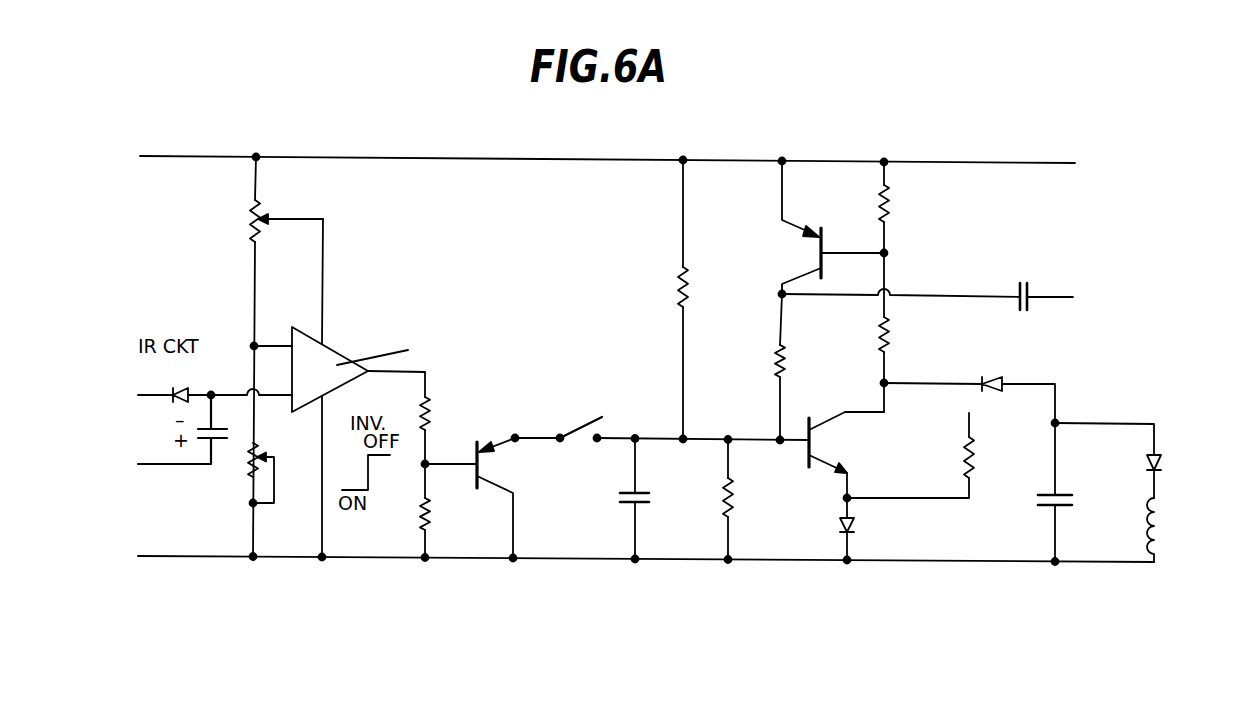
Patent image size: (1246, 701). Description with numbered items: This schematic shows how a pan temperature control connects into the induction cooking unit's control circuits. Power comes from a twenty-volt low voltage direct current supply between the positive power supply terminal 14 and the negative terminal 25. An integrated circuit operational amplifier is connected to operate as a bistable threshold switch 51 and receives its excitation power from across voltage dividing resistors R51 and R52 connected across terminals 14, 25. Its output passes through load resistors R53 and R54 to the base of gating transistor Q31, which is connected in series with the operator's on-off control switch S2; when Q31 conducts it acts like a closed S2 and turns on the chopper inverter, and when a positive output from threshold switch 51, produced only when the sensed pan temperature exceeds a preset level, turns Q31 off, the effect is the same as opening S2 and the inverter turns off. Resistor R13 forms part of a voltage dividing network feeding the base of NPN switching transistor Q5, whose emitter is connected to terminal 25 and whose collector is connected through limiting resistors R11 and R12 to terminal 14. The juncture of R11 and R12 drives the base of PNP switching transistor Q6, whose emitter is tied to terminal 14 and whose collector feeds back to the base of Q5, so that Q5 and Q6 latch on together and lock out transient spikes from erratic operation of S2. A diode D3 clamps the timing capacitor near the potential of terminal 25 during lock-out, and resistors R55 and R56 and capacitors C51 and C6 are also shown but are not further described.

The positive power supply terminal 14 is at (580, 159).
The negative power supply terminal 25 is at (562, 559).
The threshold switch 51 is at (326, 353).
The voltage dividing resistor R51 is at (250, 218).
The voltage dividing resistor R52 is at (252, 471).
The load resistor R53 is at (428, 413).
The load resistor R54 is at (422, 511).
The resistor R55 is at (679, 290).
The resistor R56 is at (731, 500).
The limiting resistor R11 is at (890, 208).
The limiting resistor R12 is at (890, 342).
The voltage dividing resistor R13 is at (776, 358).
The gating transistor Q31 is at (477, 498).
The PNP switching transistor Q6 is at (824, 229).
The NPN switching transistor Q5 is at (846, 486).
The operator on-off control switch S2 is at (661, 409).
The capacitor C51 is at (652, 510).
The capacitor C6 is at (1017, 291).
The diode D3 is at (1000, 383).